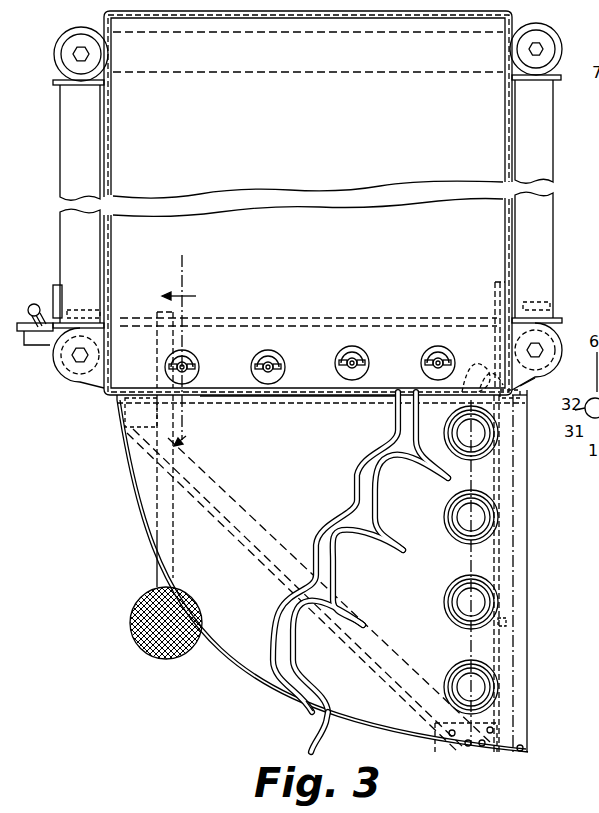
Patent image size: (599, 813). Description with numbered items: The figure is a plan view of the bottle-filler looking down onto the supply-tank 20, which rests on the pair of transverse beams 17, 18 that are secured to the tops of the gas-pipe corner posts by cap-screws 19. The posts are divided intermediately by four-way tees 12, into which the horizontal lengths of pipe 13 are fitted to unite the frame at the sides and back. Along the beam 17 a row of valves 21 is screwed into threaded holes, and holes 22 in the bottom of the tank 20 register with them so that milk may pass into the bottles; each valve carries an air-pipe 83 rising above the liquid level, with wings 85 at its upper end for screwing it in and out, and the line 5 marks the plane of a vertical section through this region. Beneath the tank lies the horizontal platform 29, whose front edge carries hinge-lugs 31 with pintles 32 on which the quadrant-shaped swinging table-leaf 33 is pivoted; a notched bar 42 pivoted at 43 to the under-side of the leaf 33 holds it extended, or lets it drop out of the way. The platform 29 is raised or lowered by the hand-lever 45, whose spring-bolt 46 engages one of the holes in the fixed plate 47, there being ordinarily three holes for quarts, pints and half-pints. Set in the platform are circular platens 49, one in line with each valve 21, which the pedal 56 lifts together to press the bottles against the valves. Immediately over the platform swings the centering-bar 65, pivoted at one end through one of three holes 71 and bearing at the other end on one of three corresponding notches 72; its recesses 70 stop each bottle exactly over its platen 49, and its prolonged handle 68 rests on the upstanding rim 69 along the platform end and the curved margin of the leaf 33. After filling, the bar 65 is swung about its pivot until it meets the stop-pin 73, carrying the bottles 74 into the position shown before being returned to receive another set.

The section line 5 is at (308, 494).
The four-way tee 12 is at (62, 38).
The horizontal lengths of pipe 13 is at (70, 243).
The transverse beam 17 is at (93, 385).
The transverse beam 18 is at (70, 53).
The cap-screws 19 is at (75, 57).
The supply-tank 20 is at (308, 203).
The valves 21 is at (186, 357).
The holes 22 is at (196, 361).
The horizontal platform 29 is at (540, 381).
The hinge-lugs 31 is at (532, 407).
The pintles 32 is at (176, 424).
The swinging table-leaf 33 is at (163, 535).
The notched bar 42 is at (513, 557).
The pivot 43 is at (506, 622).
The hand-lever 45 is at (34, 305).
The spring-bolt 46 is at (24, 333).
The plate 47 is at (55, 290).
The circular platen 49 is at (267, 397).
The pedal 56 is at (135, 642).
The centering-bar 65 is at (333, 517).
The handle 68 is at (310, 746).
The upstanding rim 69 is at (265, 682).
The recesses 70 is at (370, 552).
The holes 71 is at (482, 366).
The notches 72 is at (318, 718).
The stop-pin 73 is at (523, 748).
The bottles 74 is at (466, 461).
The air-pipe 83 is at (172, 366).
The wings 85 is at (198, 368).